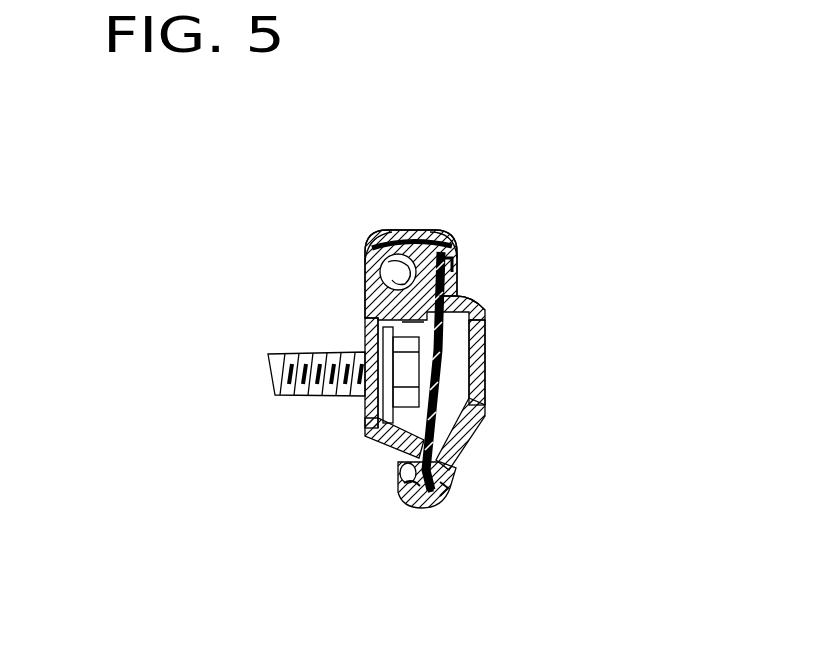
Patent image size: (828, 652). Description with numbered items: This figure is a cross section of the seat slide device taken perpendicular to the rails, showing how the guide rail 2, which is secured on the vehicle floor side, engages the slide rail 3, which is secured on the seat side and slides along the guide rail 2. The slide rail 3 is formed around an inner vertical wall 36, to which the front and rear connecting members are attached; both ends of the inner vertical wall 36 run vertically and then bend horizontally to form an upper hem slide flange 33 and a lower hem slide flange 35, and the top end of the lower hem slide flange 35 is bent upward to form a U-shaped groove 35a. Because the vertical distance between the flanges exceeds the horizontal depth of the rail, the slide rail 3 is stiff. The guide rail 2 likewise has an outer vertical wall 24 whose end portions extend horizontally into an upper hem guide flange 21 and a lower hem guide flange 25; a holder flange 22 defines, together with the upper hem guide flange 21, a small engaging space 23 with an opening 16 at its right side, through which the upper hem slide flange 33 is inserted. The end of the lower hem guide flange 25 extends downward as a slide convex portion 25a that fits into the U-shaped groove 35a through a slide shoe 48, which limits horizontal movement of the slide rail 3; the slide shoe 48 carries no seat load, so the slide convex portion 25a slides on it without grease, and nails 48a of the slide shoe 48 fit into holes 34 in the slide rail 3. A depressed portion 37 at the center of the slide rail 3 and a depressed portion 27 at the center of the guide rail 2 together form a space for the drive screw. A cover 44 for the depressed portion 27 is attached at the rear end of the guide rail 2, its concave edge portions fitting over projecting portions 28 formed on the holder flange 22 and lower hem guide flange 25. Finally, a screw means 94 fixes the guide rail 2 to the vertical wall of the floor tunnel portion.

The guide rail 2 is at (379, 216).
The slide rail 3 is at (498, 356).
The opening 16 is at (445, 240).
The upper hem guide flange 21 is at (432, 227).
The holder flange 22 is at (450, 262).
The engaging space 23 is at (395, 282).
The outer vertical wall 24 is at (382, 326).
The lower hem guide flange 25 is at (364, 446).
The slide convex portion 25a is at (404, 490).
The depressed portion 27 is at (467, 300).
The projecting portions 28 is at (446, 276).
The upper hem slide flange 33 is at (368, 242).
The holes 34 is at (455, 458).
The lower hem slide flange 35 is at (418, 510).
The U-shaped groove 35a is at (398, 466).
The inner vertical wall 36 is at (490, 322).
The depressed portion 37 is at (452, 380).
The cover 44 is at (474, 408).
The slide shoe 48 is at (440, 506).
The nails 48a is at (450, 480).
The screw means 94 is at (284, 350).